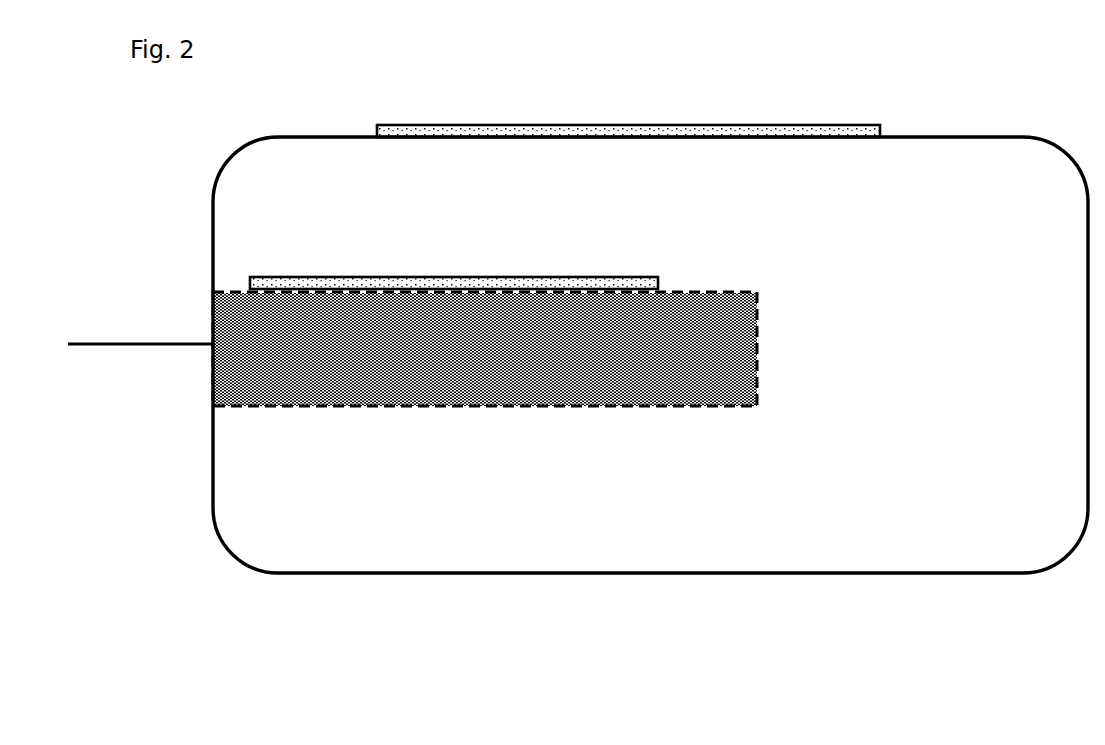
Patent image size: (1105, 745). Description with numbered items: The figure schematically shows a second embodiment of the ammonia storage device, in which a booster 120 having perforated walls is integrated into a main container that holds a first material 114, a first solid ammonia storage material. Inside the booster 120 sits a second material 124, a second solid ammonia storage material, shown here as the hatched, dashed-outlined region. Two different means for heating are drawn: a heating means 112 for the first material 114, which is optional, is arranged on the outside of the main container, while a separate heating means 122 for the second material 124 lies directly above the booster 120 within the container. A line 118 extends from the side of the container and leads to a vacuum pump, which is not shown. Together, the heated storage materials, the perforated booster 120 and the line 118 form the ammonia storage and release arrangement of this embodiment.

The heating means 112 is at (415, 118).
The first material 114 is at (650, 355).
The line 118 is at (145, 346).
The booster 120 is at (513, 402).
The heating means 122 is at (338, 275).
The second material 124 is at (527, 331).